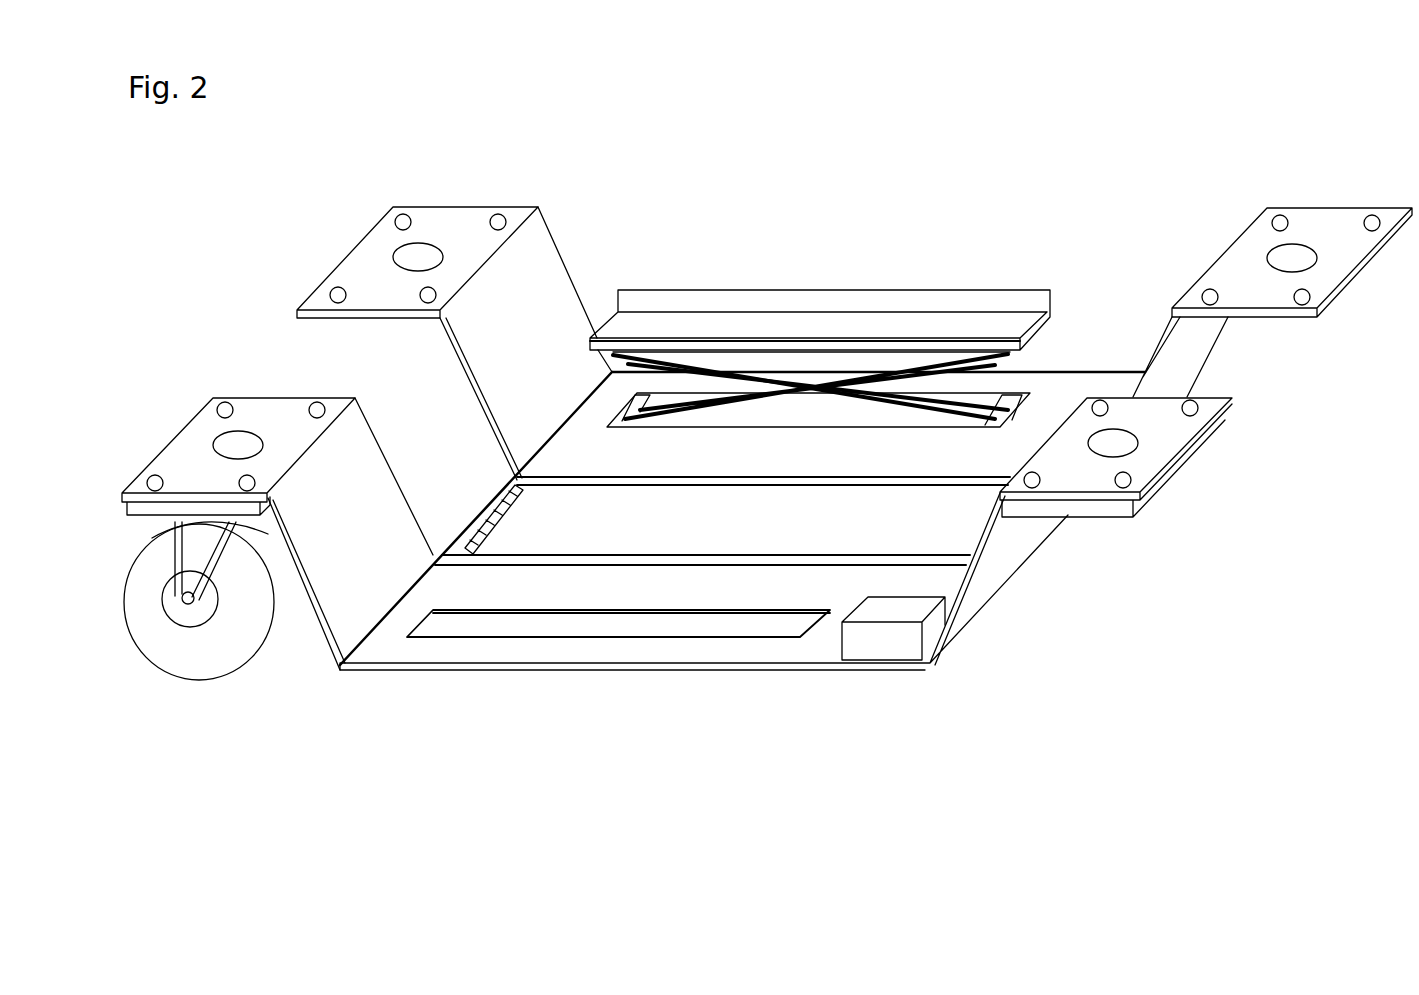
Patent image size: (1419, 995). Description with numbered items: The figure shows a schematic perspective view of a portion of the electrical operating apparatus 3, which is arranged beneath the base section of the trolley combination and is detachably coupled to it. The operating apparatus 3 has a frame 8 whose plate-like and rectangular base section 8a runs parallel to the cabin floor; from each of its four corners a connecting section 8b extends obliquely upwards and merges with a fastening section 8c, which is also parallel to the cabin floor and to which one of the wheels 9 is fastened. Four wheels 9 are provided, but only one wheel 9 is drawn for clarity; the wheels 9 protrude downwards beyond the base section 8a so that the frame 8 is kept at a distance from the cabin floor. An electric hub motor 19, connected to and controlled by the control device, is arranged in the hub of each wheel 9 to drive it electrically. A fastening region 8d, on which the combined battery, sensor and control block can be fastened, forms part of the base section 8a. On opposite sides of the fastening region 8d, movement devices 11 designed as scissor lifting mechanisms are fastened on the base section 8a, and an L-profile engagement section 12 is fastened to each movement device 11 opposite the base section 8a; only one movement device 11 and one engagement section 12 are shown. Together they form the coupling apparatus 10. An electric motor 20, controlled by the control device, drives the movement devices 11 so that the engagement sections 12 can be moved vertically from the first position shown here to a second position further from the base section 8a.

The electrical operating apparatus 3 is at (1140, 220).
The frame 8 is at (532, 702).
The base section 8a is at (663, 652).
The connecting section 8b is at (343, 590).
The fastening section 8c is at (280, 427).
The fastening region 8d is at (723, 517).
The wheel 9 is at (223, 642).
The coupling apparatus 10 is at (783, 245).
The movement device 11 is at (893, 393).
The engagement section 12 is at (977, 303).
The electric hub motor 19 is at (188, 605).
The electric motor 20 is at (888, 647).